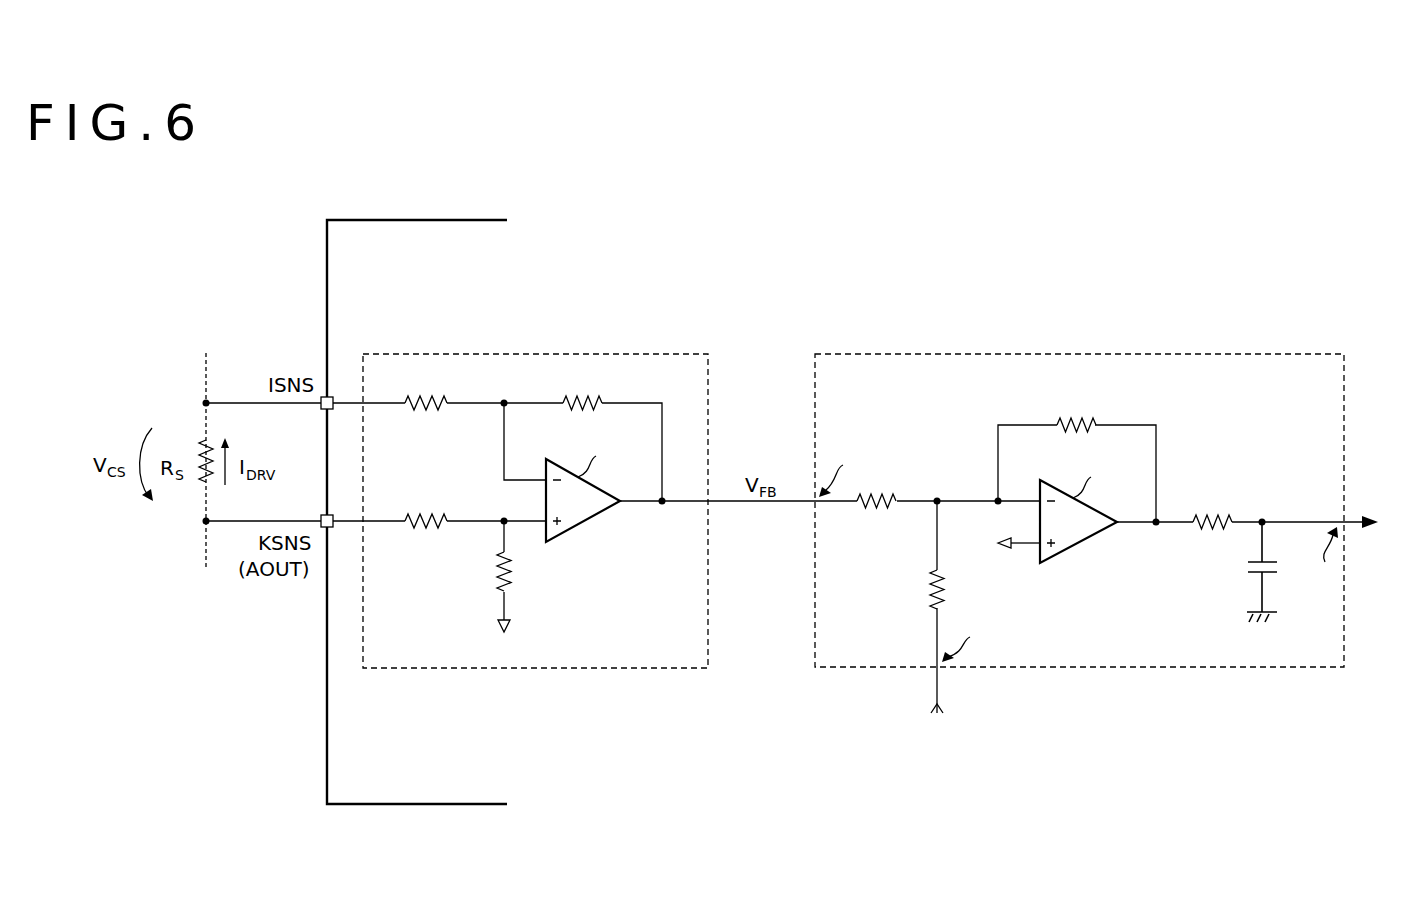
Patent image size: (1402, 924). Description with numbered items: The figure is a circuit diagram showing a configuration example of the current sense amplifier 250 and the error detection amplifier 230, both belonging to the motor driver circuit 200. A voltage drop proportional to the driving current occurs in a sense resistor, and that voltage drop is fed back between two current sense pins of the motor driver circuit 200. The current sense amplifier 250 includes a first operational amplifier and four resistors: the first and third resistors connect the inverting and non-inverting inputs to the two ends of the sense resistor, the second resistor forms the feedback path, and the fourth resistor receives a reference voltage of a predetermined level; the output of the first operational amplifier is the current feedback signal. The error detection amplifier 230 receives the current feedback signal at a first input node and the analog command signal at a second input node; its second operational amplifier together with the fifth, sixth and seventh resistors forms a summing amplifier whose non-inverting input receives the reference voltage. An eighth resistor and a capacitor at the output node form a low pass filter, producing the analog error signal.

The motor driver circuit 200 is at (405, 220).
The current sense amplifier 250 is at (641, 356).
The error detection amplifier 230 is at (1195, 356).